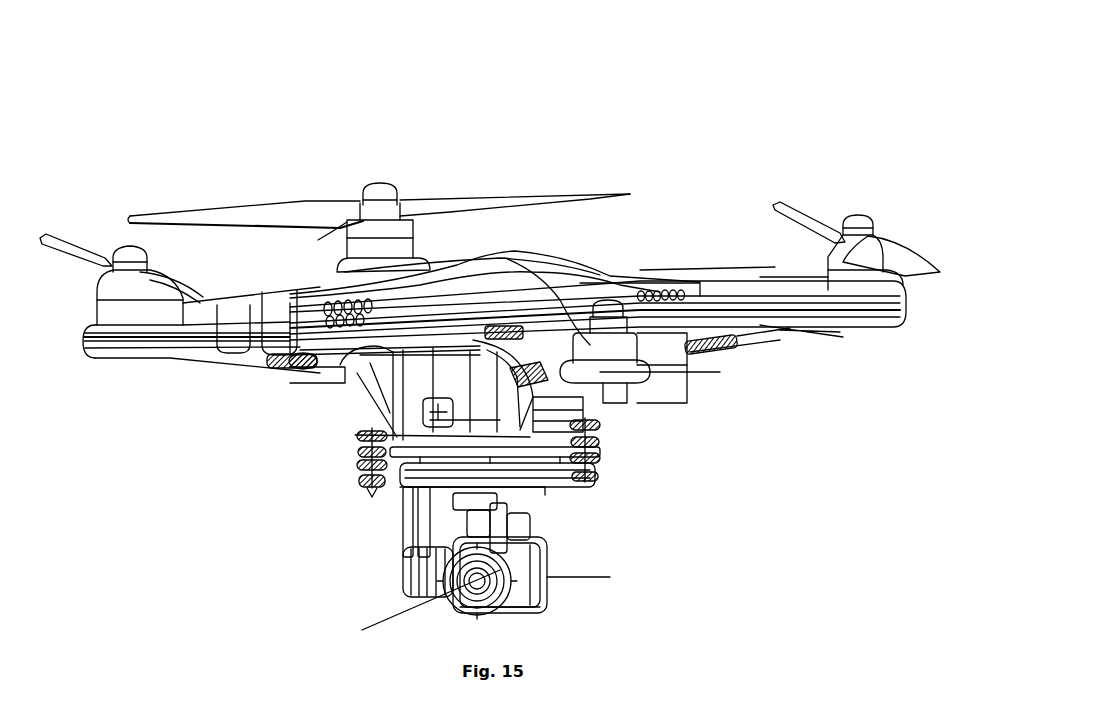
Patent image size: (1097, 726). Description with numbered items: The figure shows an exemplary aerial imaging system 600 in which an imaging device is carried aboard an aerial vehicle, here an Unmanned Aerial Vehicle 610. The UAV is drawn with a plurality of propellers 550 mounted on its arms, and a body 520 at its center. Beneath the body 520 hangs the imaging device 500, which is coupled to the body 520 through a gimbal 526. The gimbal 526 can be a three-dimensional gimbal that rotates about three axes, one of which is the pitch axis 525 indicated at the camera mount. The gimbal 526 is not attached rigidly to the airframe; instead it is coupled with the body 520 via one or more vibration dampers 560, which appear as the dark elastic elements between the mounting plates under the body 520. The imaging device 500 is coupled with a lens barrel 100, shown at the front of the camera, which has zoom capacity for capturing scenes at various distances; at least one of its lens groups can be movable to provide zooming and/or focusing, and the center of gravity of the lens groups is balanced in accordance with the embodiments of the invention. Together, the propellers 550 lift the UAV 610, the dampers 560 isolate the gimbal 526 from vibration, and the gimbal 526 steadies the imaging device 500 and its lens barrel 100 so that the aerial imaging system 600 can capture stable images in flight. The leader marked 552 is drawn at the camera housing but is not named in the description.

The aerial imaging system 600 is at (958, 38).
The Unmanned Aerial Vehicle 610 is at (583, 143).
The propellers 550 is at (186, 305).
The body 520 is at (385, 397).
The vibration dampers 560 is at (357, 465).
The gimbal 526 is at (533, 515).
The camera housing 552 is at (547, 552).
The pitch axis 525 is at (400, 571).
The lens barrel 100 is at (510, 587).
The imaging device 500 is at (518, 612).